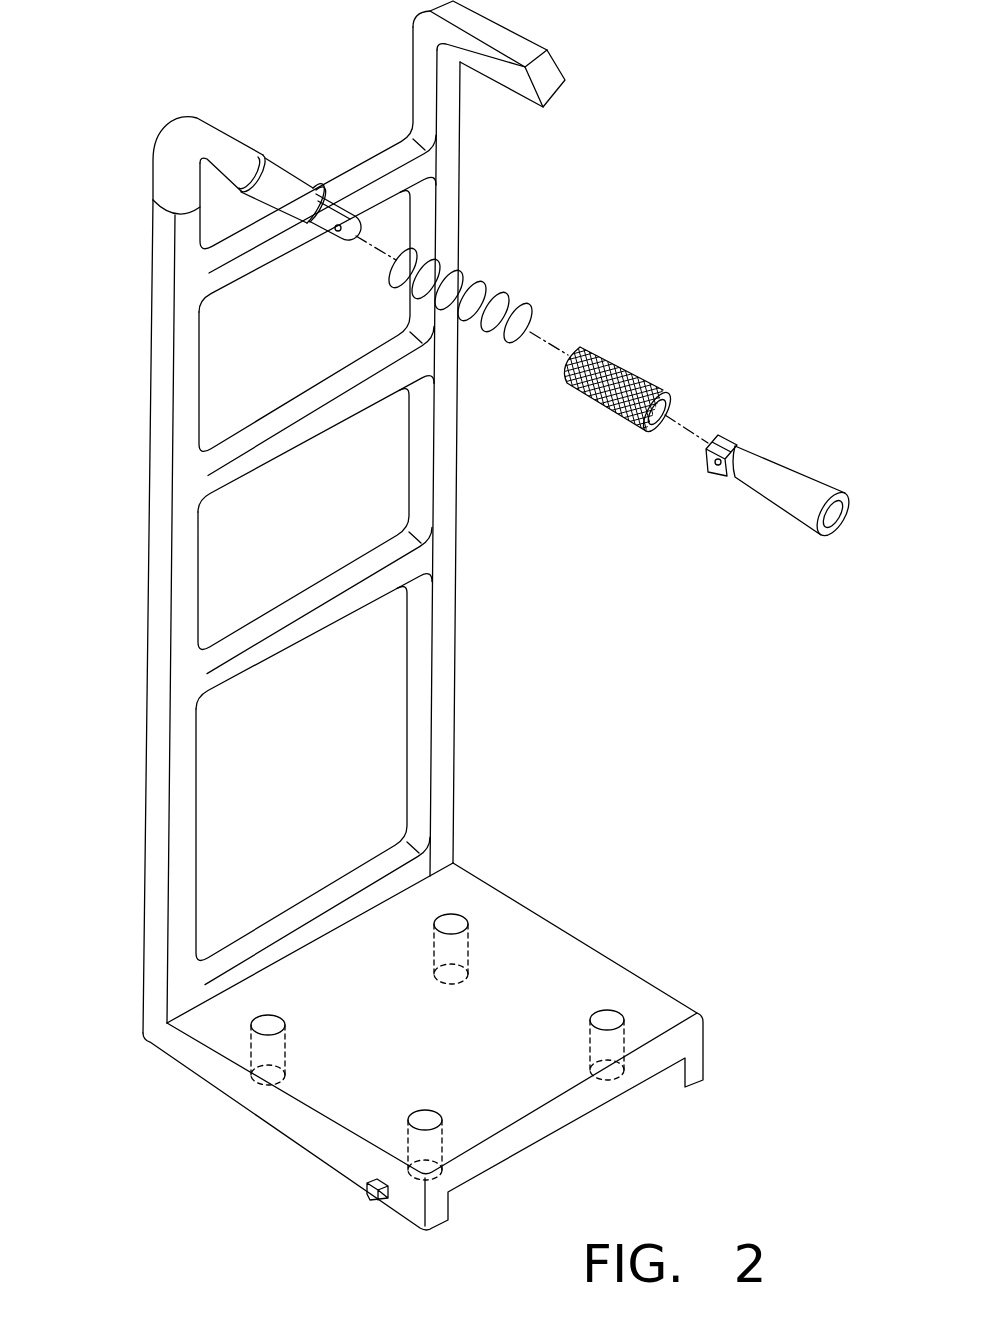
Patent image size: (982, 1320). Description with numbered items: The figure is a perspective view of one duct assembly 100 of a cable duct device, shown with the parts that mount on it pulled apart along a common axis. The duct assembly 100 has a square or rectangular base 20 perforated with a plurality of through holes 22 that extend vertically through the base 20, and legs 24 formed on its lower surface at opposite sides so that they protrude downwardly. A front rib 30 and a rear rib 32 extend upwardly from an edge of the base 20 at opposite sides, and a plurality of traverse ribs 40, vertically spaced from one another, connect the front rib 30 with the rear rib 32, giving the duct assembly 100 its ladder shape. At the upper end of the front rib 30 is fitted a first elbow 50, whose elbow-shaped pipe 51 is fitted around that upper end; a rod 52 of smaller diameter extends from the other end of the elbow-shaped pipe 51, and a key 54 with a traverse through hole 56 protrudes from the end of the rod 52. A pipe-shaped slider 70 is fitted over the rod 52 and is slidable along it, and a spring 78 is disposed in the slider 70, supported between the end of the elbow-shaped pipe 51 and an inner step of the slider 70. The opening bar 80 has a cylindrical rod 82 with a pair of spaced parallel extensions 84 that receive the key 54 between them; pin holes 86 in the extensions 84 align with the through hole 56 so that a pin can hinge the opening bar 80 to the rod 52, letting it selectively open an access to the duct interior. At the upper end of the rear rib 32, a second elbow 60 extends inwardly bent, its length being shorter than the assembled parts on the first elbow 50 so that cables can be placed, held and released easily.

The duct assembly 100 is at (620, 699).
The base 20 is at (468, 903).
The through holes 22 is at (607, 1012).
The legs 24 is at (367, 1193).
The front rib 30 is at (178, 847).
The rear rib 32 is at (447, 675).
The traverse ribs 40 is at (302, 628).
The first elbow 50 is at (247, 136).
The elbow-shaped pipe 51 is at (207, 137).
The rod 52 is at (282, 178).
The key 54 is at (318, 222).
The traverse through hole 56 is at (337, 236).
The second elbow 60 is at (527, 50).
The pipe-shaped slider 70 is at (623, 360).
The spring 78 is at (517, 303).
The opening bar 80 is at (803, 463).
The cylindrical rod 82 is at (793, 512).
The extensions 84 is at (737, 437).
The pin holes 86 is at (720, 465).